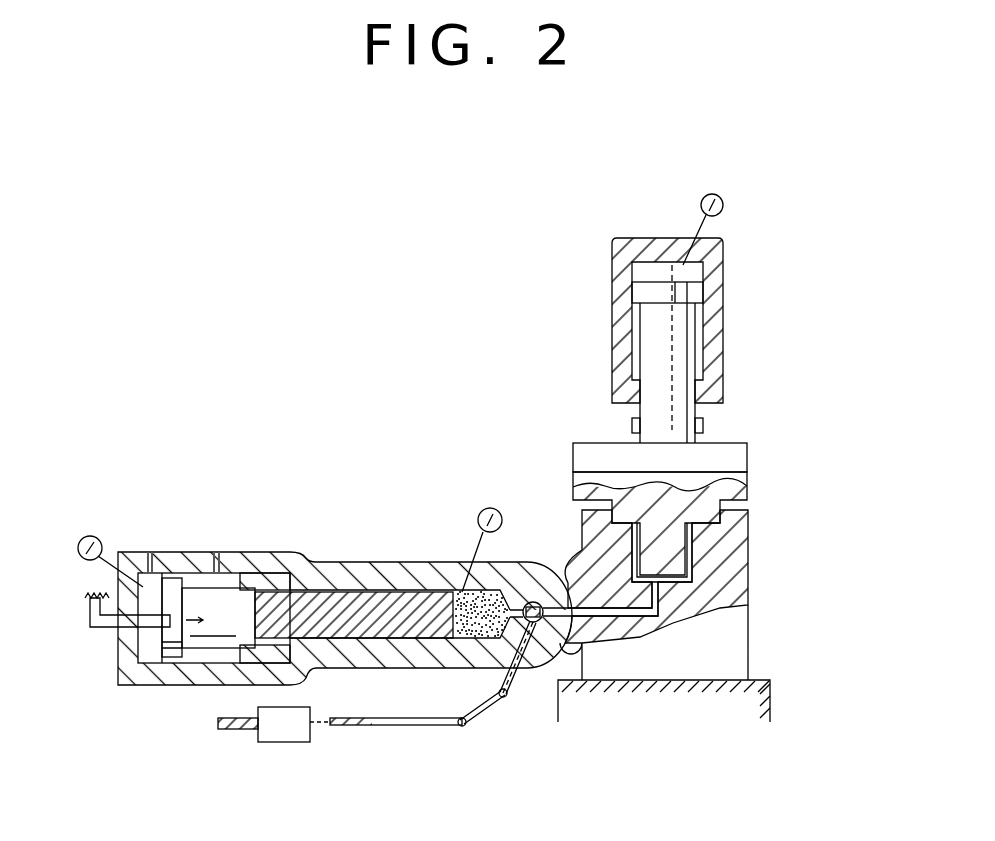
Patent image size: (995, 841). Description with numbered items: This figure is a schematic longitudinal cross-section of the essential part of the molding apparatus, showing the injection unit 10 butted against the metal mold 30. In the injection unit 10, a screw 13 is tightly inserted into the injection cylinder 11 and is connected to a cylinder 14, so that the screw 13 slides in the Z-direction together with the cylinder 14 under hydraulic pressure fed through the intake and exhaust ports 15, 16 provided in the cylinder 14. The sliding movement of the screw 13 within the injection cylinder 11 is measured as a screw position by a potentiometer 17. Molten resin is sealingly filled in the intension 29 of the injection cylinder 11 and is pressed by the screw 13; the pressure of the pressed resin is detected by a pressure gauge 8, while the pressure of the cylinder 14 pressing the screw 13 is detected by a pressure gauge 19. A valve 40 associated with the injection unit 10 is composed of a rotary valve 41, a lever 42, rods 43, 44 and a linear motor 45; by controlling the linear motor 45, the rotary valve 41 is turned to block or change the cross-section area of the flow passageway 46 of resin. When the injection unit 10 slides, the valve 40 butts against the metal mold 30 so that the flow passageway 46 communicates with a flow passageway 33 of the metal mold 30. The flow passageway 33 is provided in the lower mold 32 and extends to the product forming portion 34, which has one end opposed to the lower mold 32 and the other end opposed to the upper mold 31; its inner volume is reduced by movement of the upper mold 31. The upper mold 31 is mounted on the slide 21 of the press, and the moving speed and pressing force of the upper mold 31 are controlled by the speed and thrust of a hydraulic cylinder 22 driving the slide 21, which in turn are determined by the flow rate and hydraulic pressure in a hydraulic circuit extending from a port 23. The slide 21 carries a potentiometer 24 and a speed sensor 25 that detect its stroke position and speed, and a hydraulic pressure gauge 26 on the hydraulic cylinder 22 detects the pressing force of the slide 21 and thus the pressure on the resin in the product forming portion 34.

The pressure gauge 8 is at (490, 507).
The injection unit 10 is at (413, 548).
The injection cylinder 11 is at (313, 562).
The screw 13 is at (351, 600).
The cylinder 14 is at (185, 552).
The intake and exhaust port 15 is at (148, 552).
The intake and exhaust port 16 is at (220, 552).
The potentiometer 17 is at (82, 602).
The pressure gauge 19 is at (83, 537).
The slide 21 is at (740, 457).
The hydraulic cylinder 22 is at (638, 240).
The port 23 is at (703, 272).
The potentiometer 24 is at (703, 422).
The speed sensor 25 is at (632, 425).
The hydraulic pressure gauge 26 is at (706, 196).
The intension of the injection cylinder 29 is at (460, 600).
The metal mold 30 is at (748, 605).
The upper mold 31 is at (745, 487).
The lower mold 32 is at (740, 556).
The flow passageway 33 is at (622, 623).
The product forming portion 34 is at (727, 522).
The valve 40 is at (527, 675).
The rotary valve 41 is at (562, 640).
The lever 42 is at (500, 680).
The rod 43 is at (480, 717).
The rod 44 is at (437, 725).
The linear motor 45 is at (290, 742).
The flow passageway 46 is at (551, 580).